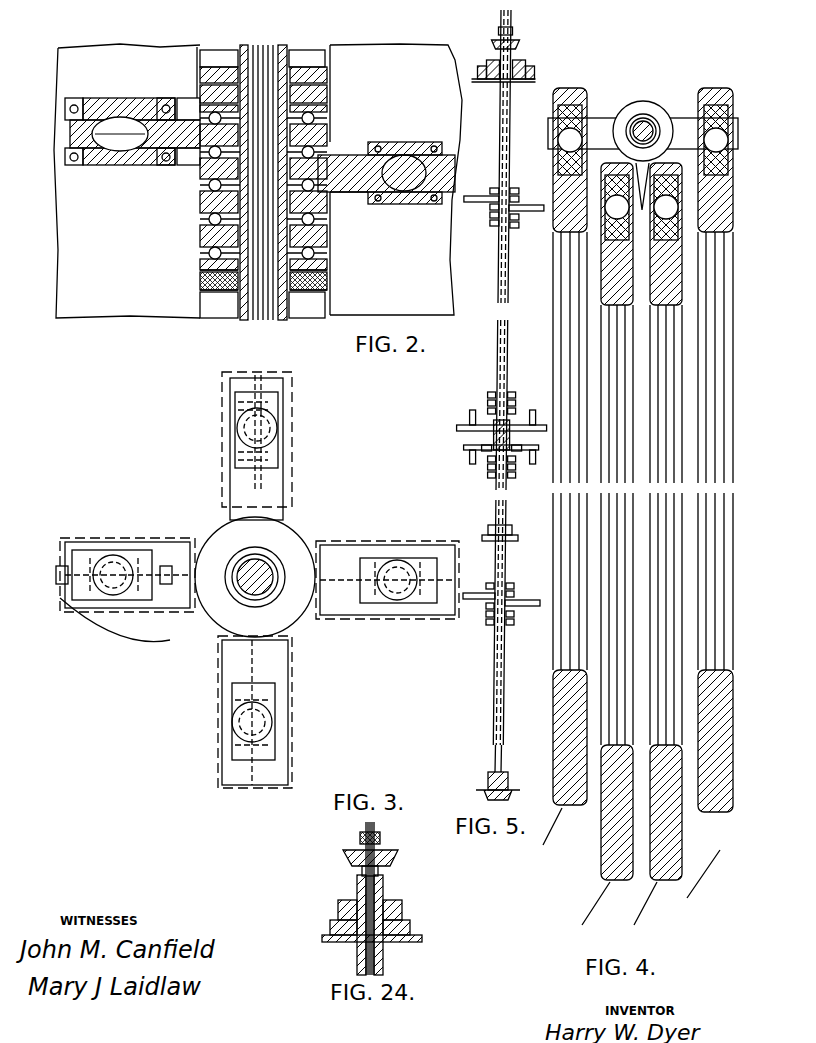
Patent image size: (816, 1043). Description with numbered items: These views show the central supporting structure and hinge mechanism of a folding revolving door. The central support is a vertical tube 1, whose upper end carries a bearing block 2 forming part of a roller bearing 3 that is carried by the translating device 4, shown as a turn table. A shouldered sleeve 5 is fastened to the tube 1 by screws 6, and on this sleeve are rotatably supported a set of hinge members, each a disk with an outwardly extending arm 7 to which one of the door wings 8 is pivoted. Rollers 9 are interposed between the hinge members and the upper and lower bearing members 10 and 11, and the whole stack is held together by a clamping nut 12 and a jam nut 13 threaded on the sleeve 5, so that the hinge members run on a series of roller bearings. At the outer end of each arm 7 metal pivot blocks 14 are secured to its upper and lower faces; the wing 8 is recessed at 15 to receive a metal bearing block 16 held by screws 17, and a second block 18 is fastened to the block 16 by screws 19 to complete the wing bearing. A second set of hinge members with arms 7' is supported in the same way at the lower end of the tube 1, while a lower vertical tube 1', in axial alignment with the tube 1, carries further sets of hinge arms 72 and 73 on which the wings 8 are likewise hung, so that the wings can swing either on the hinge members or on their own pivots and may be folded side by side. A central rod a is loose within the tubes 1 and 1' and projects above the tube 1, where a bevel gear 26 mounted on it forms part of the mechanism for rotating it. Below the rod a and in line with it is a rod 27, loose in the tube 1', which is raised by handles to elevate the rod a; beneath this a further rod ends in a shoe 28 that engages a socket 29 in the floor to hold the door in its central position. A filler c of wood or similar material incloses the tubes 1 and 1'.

In FIG. 2, the vertical tube 1 is at (247, 191).
In FIG. 3, the vertical tube 1 is at (255, 577).
In FIG. 5, the vertical tube 1 is at (496, 377).
In FIG. 4, the vertical tube 1 is at (643, 97).
In FIG. 24, the vertical tube 1 is at (349, 898).
In FIG. 5, the lower vertical tube 1' is at (479, 724).
In FIG. 5, the bearing block 2 is at (516, 62).
In FIG. 24, the bearing block 2 is at (402, 912).
In FIG. 5, the roller bearing 3 is at (522, 74).
In FIG. 24, the roller bearing 3 is at (336, 912).
In FIG. 5, the translating device 4 is at (470, 80).
In FIG. 24, the translating device 4 is at (322, 938).
In FIG. 2, the shouldered sleeve 5 is at (205, 298).
In FIG. 2, the screws 6 is at (200, 281).
In FIG. 2, the hinge arm 7 is at (262, 124).
In FIG. 5, the hinge arm 7 is at (497, 216).
In FIG. 5, the lower hinge arms 7' is at (502, 435).
In FIG. 5, the hinge arms of third set 72 is at (488, 472).
In FIG. 5, the hinge arms of lowest set 73 is at (490, 606).
In FIG. 4, the hinge arms of lowest set 73 is at (600, 180).
In FIG. 2, the door wing 8 is at (72, 238).
In FIG. 3, the door wing 8 is at (166, 545).
In FIG. 4, the door wing 8 is at (752, 172).
In FIG. 2, the rollers 9 is at (318, 122).
In FIG. 2, the upper bearing member 10 is at (330, 98).
In FIG. 2, the lower bearing member 11 is at (200, 262).
In FIG. 2, the clamping nut 12 is at (198, 66).
In FIG. 2, the jam nut 13 is at (220, 66).
In FIG. 2, the metal pivot blocks 14 is at (118, 100).
In FIG. 3, the recess 15 is at (168, 612).
In FIG. 2, the metal bearing block 16 is at (128, 100).
In FIG. 3, the metal bearing block 16 is at (80, 556).
In FIG. 2, the screws 17 is at (72, 105).
In FIG. 3, the screws 17 is at (60, 570).
In FIG. 2, the bearing block 18 is at (418, 142).
In FIG. 3, the bearing block 18 is at (136, 600).
In FIG. 3, the screws 19 is at (68, 594).
In FIG. 5, the bevel gear 26 is at (514, 40).
In FIG. 5, the rod 27 is at (494, 714).
In FIG. 5, the shoe 28 is at (490, 776).
In FIG. 5, the socket 29 is at (482, 794).
In FIG. 5, the central rod a is at (497, 364).
In FIG. 2, the filler c is at (302, 58).